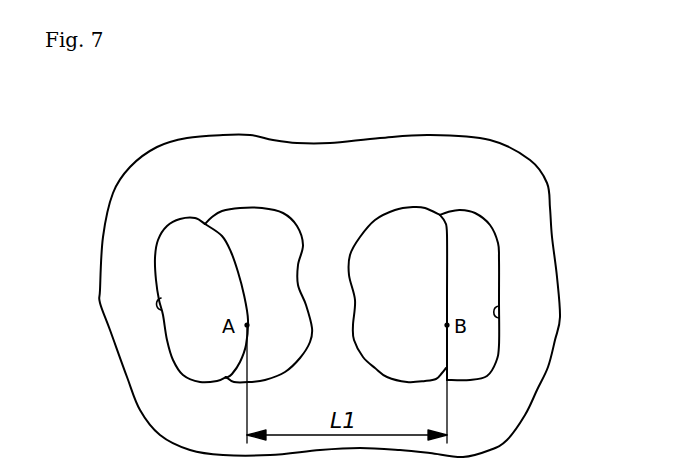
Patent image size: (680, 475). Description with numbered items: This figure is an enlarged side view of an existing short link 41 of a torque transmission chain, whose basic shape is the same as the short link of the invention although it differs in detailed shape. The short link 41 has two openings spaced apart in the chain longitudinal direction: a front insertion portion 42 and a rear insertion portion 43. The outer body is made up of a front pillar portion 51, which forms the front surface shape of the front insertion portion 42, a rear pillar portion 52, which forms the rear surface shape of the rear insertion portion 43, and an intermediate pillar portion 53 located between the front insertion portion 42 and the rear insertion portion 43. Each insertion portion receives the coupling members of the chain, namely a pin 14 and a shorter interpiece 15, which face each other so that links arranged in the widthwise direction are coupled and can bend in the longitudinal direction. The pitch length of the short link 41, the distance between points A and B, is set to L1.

The short link 41 is at (329, 279).
The front pillar portion 51 is at (537, 285).
The rear pillar portion 52 is at (130, 290).
The intermediate pillar portion 53 is at (332, 282).
The pin 14 is at (185, 313).
The interpiece 15 is at (479, 296).
The rear insertion portion 43 is at (160, 310).
The front insertion portion 42 is at (498, 318).